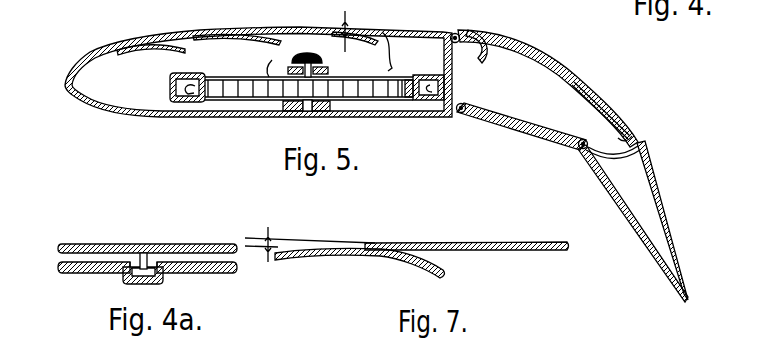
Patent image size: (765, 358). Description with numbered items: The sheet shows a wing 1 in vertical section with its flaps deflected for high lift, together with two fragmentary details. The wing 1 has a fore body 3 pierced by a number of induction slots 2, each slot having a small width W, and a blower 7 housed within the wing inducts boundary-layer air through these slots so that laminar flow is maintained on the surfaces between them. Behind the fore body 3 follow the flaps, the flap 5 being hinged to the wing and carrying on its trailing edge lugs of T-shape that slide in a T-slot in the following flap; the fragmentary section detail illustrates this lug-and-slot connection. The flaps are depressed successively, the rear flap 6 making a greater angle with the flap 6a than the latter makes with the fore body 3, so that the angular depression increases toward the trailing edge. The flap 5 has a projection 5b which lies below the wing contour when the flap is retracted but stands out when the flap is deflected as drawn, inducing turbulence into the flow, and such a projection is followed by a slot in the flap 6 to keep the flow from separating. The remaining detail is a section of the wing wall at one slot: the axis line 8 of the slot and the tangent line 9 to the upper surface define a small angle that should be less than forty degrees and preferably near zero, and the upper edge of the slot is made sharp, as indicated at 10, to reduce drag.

In FIG. 5, the wing 1 is at (151, 118).
In FIG. 5, the induction slots 2 is at (156, 40).
In FIG. 5, the fore body 3 is at (378, 117).
In FIG. 5, the flap 5 is at (510, 50).
In FIG. 5, the projection 5b is at (459, 34).
In FIG. 5, the rear flap 6 is at (627, 114).
In FIG. 5, the flap 6a is at (522, 128).
In FIG. 5, the blower 7 is at (250, 86).
In FIG. 7, the axis line 8 is at (310, 237).
In FIG. 7, the tangent line 9 is at (344, 261).
In FIG. 7, the sharp upper edge of slot 10 is at (374, 244).
In FIG. 5, the slot width W is at (348, 26).